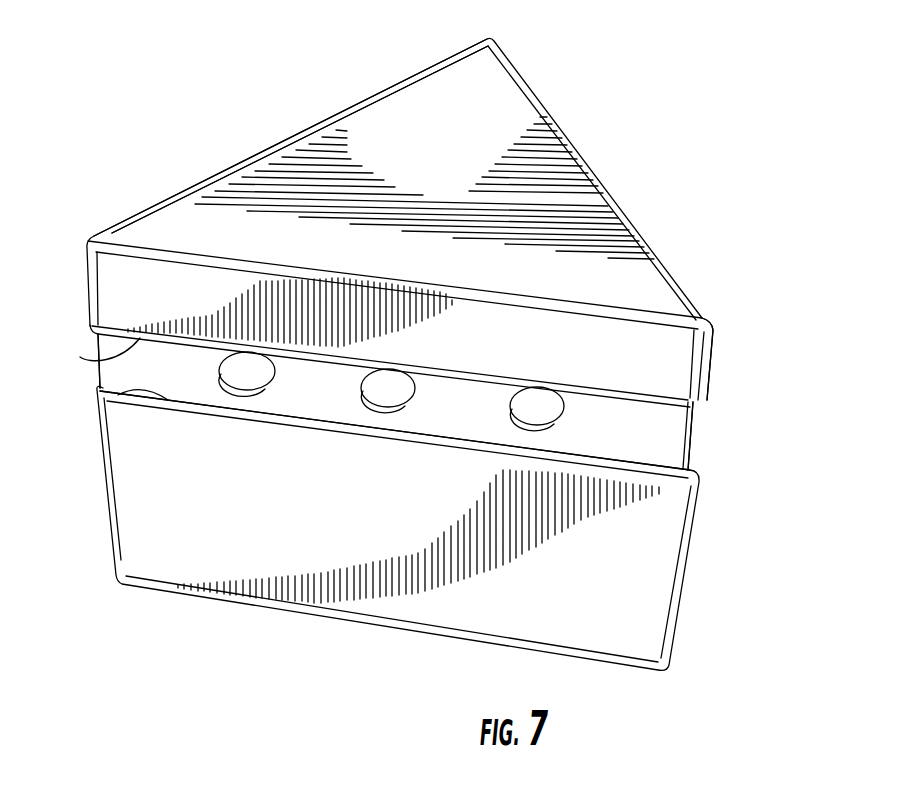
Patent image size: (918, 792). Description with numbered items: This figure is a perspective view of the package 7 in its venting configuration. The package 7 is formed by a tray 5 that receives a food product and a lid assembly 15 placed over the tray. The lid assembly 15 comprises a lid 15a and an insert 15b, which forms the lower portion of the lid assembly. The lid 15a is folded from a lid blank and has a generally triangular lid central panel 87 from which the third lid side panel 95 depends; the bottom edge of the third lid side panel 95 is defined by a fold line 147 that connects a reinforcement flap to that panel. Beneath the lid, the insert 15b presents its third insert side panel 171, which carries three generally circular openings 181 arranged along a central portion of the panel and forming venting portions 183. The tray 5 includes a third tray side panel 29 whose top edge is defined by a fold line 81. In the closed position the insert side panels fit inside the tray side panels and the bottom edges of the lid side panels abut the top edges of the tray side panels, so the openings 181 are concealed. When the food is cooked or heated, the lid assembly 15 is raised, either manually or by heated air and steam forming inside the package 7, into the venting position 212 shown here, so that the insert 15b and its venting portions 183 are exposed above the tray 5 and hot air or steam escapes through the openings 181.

The package 7 is at (614, 92).
The lid assembly 15 is at (686, 240).
The lid 15a is at (690, 306).
The insert 15b is at (686, 442).
The venting position 212 is at (251, 142).
The lid central panel 87 is at (460, 171).
The third lid side panel 95 is at (491, 347).
The third insert side panel 171 is at (656, 447).
The venting portions 183 is at (210, 365).
The fold line 147 is at (100, 364).
The openings 181 is at (257, 378).
The tray 5 is at (427, 608).
The fold line 81 is at (130, 393).
The third tray side panel 29 is at (422, 529).